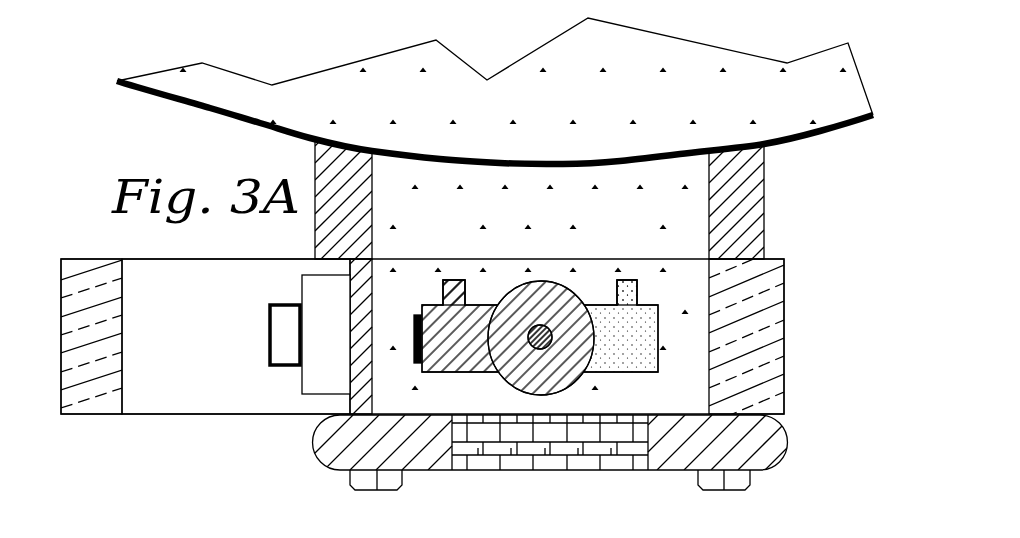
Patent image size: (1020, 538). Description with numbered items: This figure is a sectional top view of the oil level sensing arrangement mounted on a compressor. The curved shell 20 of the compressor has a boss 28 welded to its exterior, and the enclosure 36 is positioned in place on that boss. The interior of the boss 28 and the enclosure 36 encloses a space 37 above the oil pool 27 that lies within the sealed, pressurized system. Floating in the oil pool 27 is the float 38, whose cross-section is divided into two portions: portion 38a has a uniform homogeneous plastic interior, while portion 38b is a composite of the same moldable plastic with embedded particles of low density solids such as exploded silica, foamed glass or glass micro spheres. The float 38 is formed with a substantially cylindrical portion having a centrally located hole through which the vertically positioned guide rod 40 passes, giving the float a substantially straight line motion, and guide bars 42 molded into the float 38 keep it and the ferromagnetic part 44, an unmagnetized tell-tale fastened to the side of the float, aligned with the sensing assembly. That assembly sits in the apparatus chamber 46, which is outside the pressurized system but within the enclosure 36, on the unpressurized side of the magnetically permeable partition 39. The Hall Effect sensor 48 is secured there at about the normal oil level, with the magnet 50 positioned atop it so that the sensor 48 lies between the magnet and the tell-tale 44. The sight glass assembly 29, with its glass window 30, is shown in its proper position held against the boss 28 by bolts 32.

The shell 20 is at (207, 115).
The oil pool 27 is at (608, 113).
The boss 28 is at (768, 182).
The sight glass assembly 29 is at (313, 450).
The glass window 30 is at (543, 472).
The bolts 32 is at (750, 483).
The enclosure 36 is at (83, 414).
The space 37 is at (684, 395).
The float 38 is at (570, 290).
The float portion with uniform homogeneous interior 38a is at (481, 326).
The float portion with composite interior 38b is at (599, 326).
The magnetically permeable partition 39 is at (373, 337).
The guide rod 40 is at (491, 377).
The guide bars 42 is at (457, 279).
The ferromagnetic part 44 is at (415, 318).
The apparatus chamber 46 is at (238, 300).
The Hall Effect sensor 48 is at (302, 387).
The magnet 50 is at (268, 325).